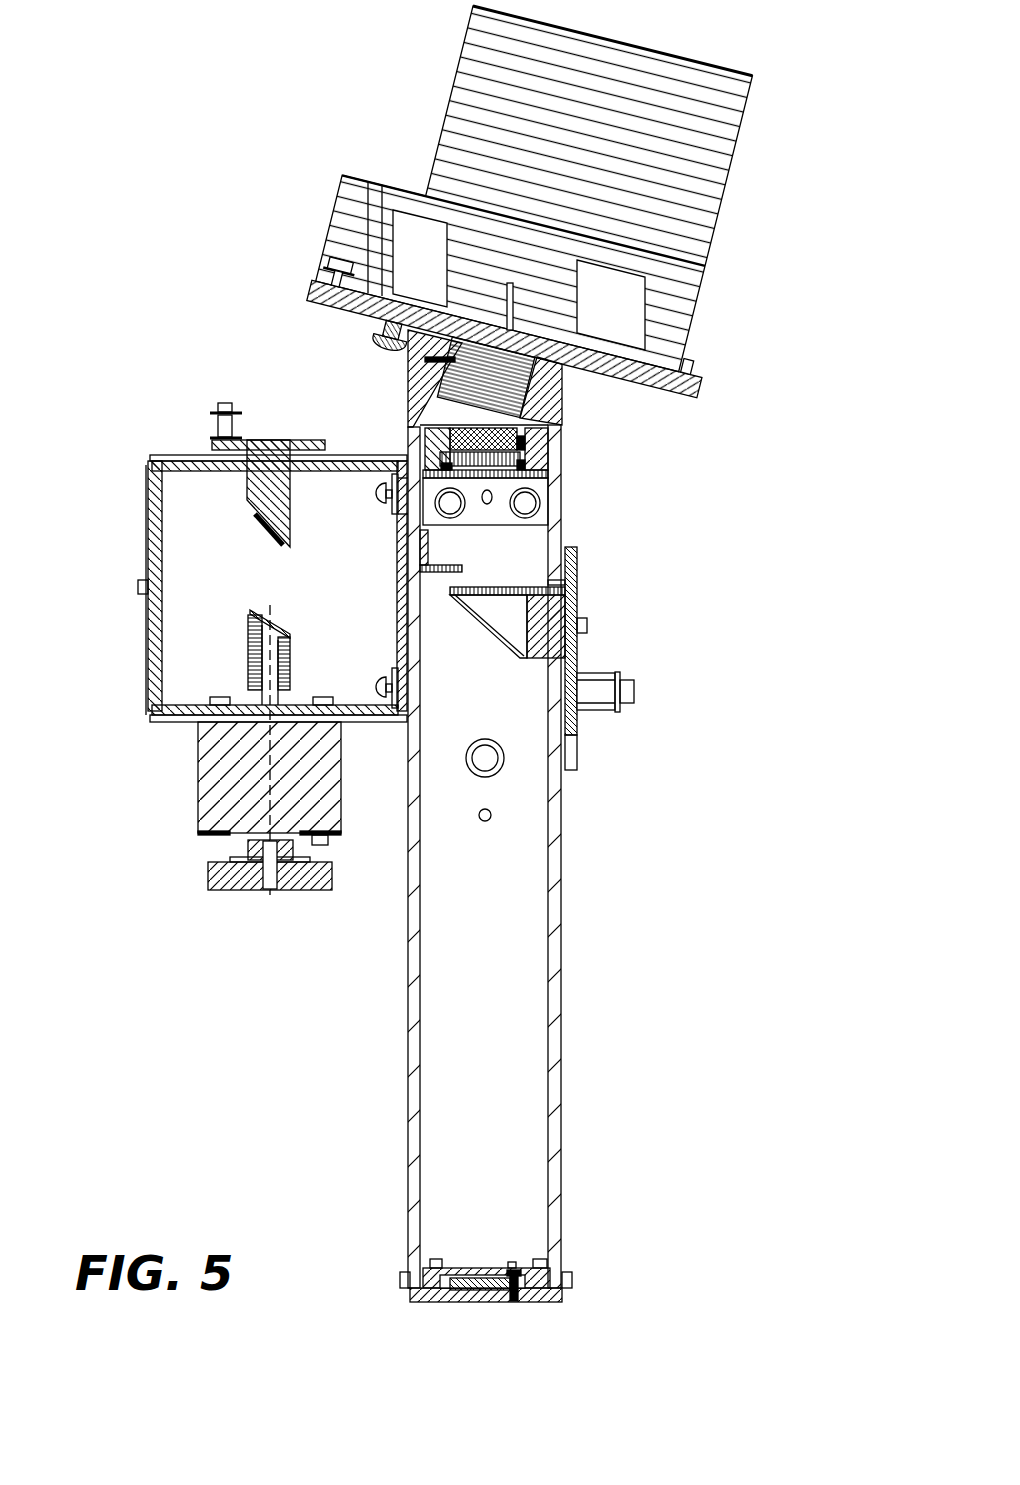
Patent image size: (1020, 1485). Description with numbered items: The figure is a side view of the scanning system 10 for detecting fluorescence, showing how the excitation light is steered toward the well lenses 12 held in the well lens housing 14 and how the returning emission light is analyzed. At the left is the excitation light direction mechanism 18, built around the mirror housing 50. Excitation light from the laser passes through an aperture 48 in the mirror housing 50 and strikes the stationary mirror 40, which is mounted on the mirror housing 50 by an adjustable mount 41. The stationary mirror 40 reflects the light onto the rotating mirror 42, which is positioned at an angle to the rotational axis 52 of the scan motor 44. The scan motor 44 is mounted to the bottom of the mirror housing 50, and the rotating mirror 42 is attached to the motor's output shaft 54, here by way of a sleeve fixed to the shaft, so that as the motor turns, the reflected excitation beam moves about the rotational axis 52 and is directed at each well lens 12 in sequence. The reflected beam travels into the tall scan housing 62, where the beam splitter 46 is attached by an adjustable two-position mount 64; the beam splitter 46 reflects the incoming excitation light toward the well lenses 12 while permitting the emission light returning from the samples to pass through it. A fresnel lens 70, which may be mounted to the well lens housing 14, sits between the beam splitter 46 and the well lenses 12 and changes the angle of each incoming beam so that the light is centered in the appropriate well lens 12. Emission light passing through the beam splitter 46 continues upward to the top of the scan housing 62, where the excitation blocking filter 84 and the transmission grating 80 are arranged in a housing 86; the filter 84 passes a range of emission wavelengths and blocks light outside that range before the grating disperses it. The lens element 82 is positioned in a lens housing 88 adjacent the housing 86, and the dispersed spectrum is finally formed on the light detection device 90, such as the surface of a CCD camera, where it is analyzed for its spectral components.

The scanning system 10 is at (324, 856).
The well lenses 12 is at (470, 1290).
The well lens housing 14 is at (560, 1300).
The excitation light direction mechanism 18 is at (176, 440).
The stationary mirror 40 is at (262, 541).
The adjustable mount 41 is at (257, 498).
The rotating mirror 42 is at (273, 623).
The scan motor 44 is at (207, 815).
The beam splitter 46 is at (483, 633).
The aperture 48 is at (158, 522).
The mirror housing 50 is at (157, 632).
The rotational axis 52 is at (272, 898).
The output shaft 54 is at (268, 674).
The scan housing 62 is at (560, 1025).
The adjustable two-position mount 64 is at (568, 648).
The fresnel lens 70 is at (458, 1268).
The transmission grating 80 is at (523, 440).
The lens element 82 is at (513, 388).
The excitation blocking filter 84 is at (530, 472).
The housing 86 is at (420, 432).
The lens housing 88 is at (415, 380).
The light detection device 90 is at (703, 240).